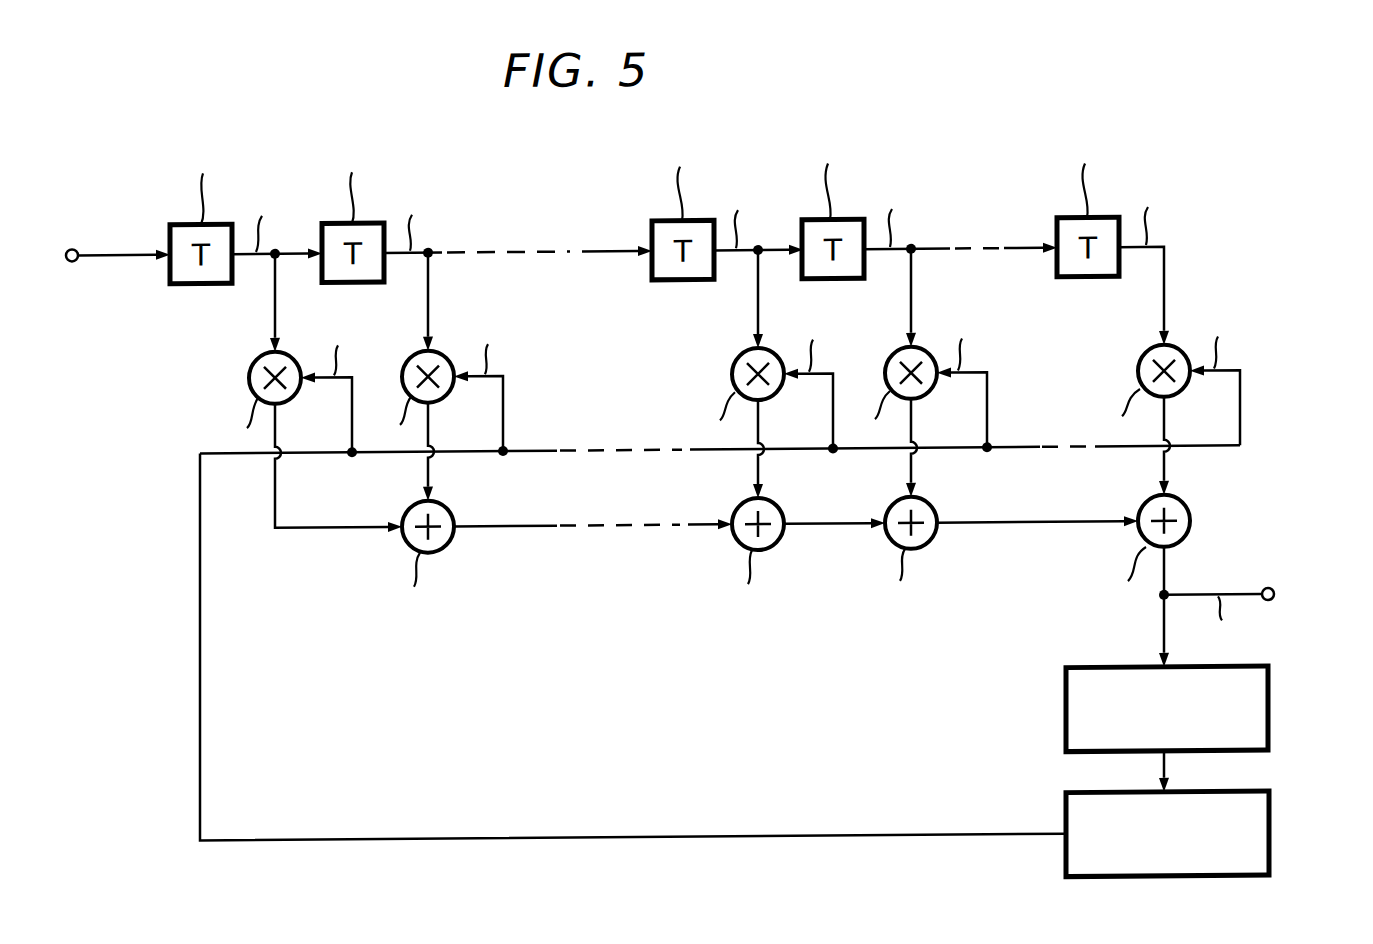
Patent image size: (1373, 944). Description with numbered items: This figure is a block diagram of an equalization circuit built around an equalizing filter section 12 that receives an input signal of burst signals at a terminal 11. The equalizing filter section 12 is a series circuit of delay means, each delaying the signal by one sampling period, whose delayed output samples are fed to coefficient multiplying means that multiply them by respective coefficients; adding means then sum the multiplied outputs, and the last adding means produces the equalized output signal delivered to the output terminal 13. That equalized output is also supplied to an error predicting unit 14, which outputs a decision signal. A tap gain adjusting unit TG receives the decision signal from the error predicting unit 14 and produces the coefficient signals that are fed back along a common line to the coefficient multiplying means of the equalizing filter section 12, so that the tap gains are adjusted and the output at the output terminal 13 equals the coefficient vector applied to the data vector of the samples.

The input terminal 11 is at (73, 263).
The equalizing filter section 12 is at (457, 137).
The output terminal 13 is at (1268, 598).
The error predicting unit 14 is at (1066, 716).
The tap gain adjusting unit TG is at (1066, 808).